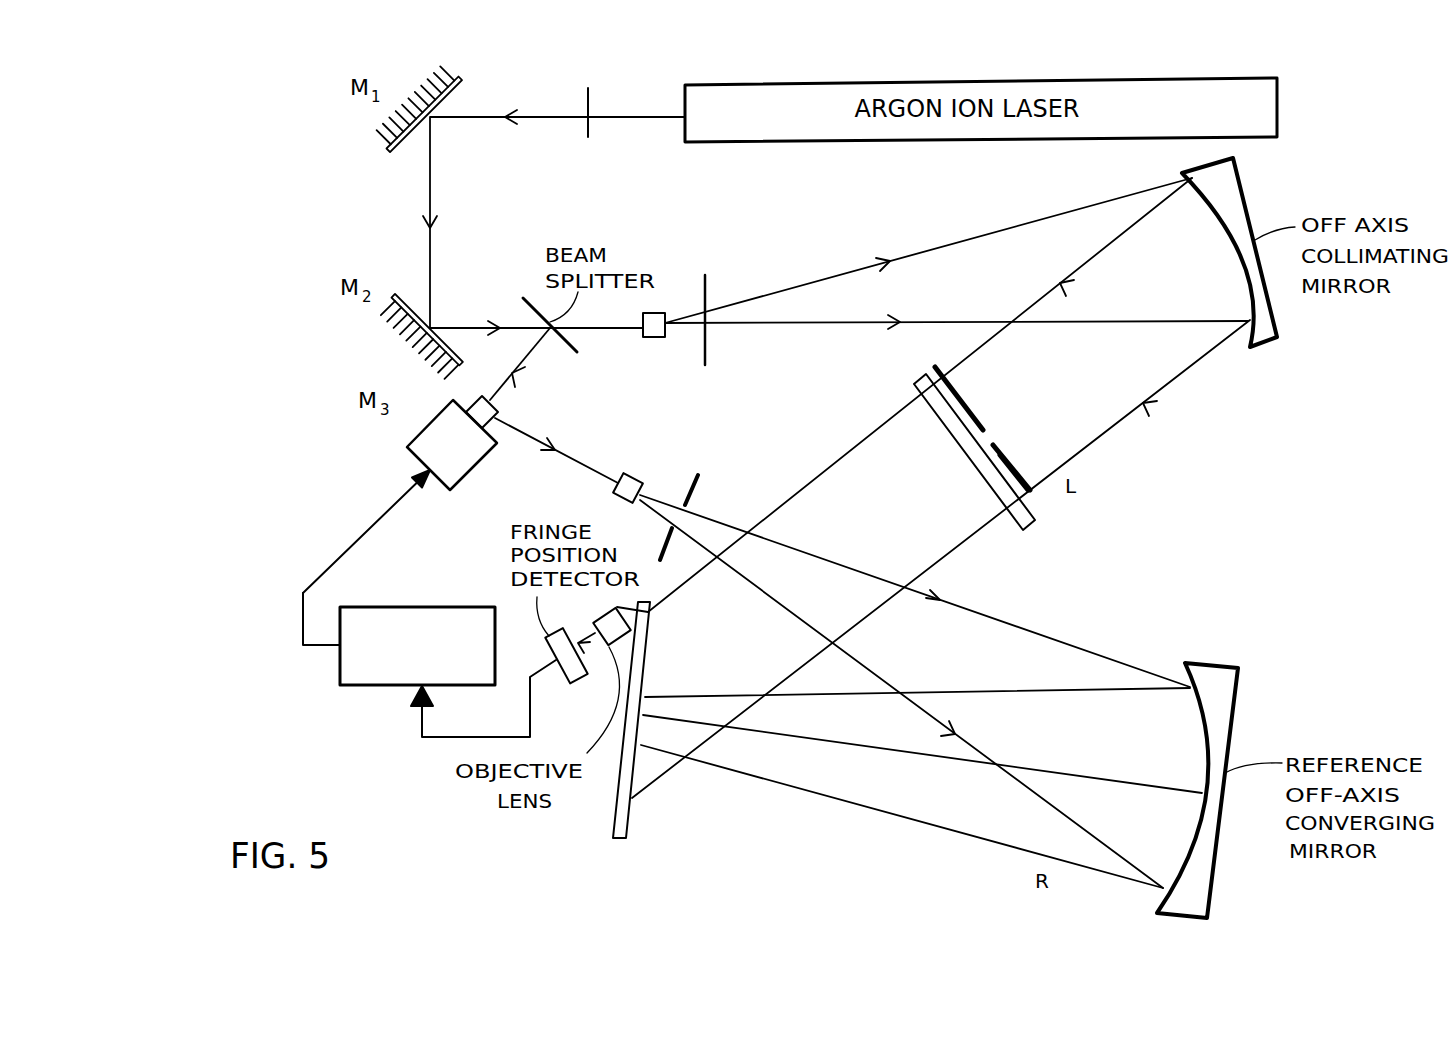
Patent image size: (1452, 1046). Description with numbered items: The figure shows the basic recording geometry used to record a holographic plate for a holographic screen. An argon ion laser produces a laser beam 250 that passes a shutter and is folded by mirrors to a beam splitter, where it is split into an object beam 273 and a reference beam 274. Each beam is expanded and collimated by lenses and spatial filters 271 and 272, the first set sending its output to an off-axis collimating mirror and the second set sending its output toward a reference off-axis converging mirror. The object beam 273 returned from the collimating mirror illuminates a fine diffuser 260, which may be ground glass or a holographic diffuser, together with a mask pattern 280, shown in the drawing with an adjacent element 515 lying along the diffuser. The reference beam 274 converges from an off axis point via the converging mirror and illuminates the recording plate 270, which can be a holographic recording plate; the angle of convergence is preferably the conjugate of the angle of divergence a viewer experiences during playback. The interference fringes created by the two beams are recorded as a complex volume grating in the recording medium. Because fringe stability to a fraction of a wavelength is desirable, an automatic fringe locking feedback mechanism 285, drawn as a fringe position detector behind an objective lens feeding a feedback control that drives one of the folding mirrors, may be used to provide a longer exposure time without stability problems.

The laser beam 250 is at (645, 117).
The lenses and spatial filters 271 is at (657, 338).
The lenses and spatial filters 272 is at (638, 477).
The object beam 273 is at (908, 549).
The reference beam 274 is at (802, 790).
The fine diffuser 260 is at (1040, 482).
The mask pattern 280 is at (1040, 500).
The automatic fringe locking feedback mechanism 285 is at (303, 623).
The diffuser 515 is at (982, 422).
The recording plate 270 is at (639, 756).